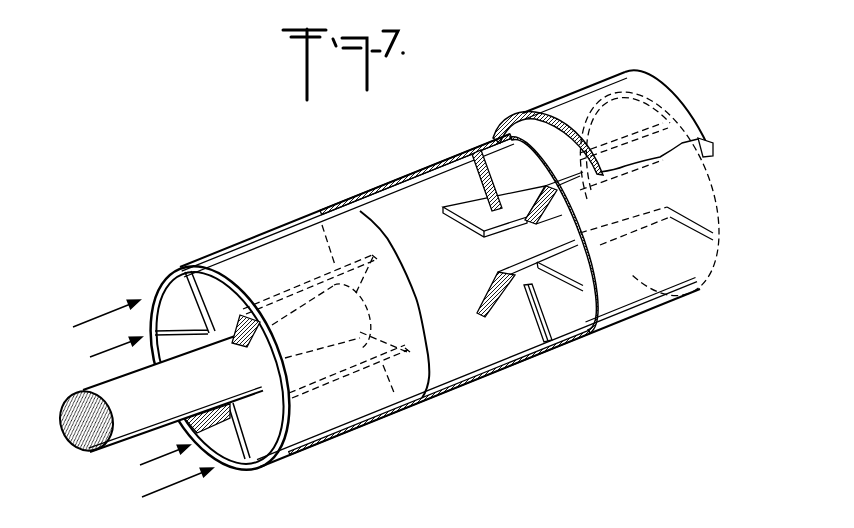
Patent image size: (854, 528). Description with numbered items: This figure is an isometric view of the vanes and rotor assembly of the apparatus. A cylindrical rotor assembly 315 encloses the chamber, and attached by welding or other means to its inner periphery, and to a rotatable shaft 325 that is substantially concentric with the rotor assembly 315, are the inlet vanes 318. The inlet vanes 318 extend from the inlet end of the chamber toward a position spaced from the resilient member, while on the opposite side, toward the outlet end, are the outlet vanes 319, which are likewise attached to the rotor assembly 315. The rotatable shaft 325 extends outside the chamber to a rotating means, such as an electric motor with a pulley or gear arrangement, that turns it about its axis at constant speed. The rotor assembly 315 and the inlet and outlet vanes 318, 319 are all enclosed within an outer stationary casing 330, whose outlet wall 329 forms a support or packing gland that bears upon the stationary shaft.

The cylindrical rotor assembly 315 is at (352, 208).
The inlet vanes 318 is at (290, 270).
The outlet vanes 319 is at (514, 262).
The rotatable shaft 325 is at (160, 406).
The outer casing outlet wall 329 is at (714, 148).
The outer stationary casing 330 is at (580, 93).